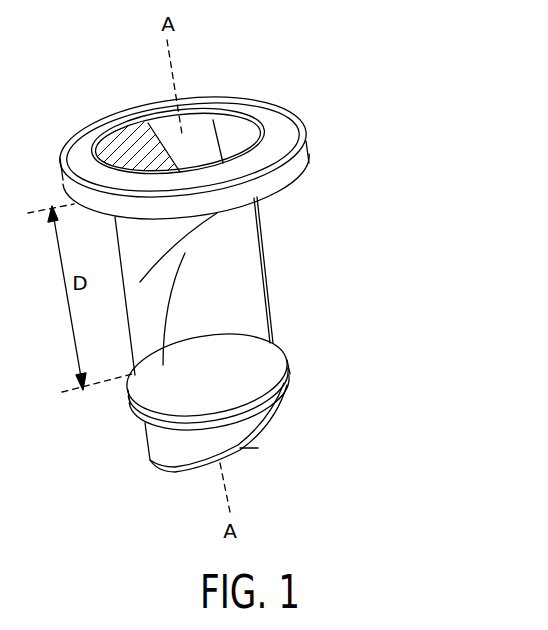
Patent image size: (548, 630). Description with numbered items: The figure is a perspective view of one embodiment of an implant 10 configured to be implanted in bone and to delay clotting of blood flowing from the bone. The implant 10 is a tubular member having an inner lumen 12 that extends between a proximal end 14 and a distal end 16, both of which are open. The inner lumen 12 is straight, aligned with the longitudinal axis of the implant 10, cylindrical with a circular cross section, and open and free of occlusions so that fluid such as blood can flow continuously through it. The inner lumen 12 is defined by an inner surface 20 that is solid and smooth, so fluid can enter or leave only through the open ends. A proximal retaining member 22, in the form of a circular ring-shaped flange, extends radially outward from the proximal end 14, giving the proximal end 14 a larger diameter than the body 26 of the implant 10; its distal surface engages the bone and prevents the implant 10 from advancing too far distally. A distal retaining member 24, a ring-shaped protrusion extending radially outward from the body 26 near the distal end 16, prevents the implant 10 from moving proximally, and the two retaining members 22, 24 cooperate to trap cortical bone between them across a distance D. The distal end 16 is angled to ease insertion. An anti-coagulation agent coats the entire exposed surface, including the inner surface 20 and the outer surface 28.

The implant 10 is at (299, 229).
The inner lumen 12 is at (204, 135).
The proximal end 14 is at (326, 114).
The distal end 16 is at (288, 443).
The inner surface 20 is at (163, 130).
The proximal retaining member 22 is at (76, 148).
The distal retaining member 24 is at (287, 375).
The body 26 is at (264, 290).
The outer surface 28 is at (255, 323).